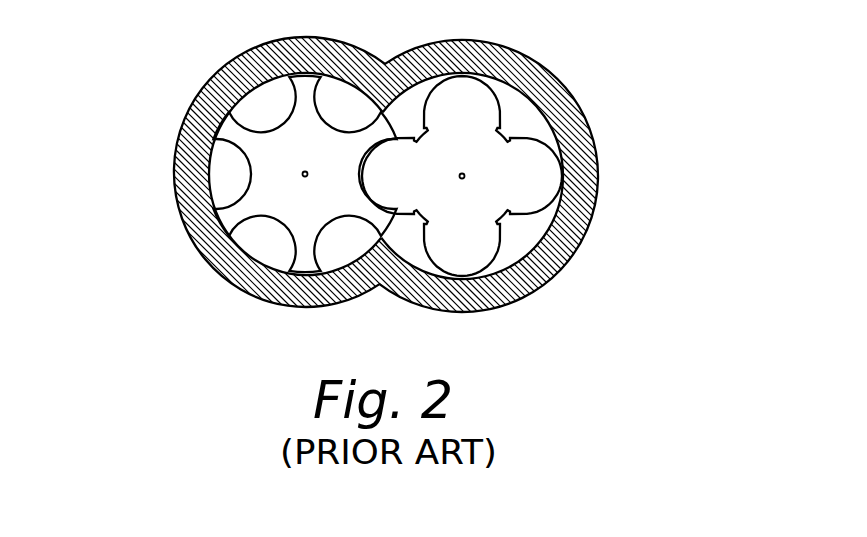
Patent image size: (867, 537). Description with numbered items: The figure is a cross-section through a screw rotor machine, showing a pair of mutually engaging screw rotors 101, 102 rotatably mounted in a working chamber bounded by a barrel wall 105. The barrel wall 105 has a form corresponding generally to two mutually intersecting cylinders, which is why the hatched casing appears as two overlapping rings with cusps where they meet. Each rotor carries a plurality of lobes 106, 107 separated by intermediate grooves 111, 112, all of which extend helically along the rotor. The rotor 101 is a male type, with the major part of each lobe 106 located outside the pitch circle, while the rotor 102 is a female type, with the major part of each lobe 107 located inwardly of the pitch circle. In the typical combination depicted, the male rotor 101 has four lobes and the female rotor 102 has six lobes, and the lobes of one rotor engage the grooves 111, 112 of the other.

The male screw rotor 101 is at (490, 180).
The female screw rotor 102 is at (283, 182).
The barrel wall 105 is at (183, 152).
The lobes of the male rotor 106 is at (458, 248).
The lobes of the female rotor 107 is at (310, 253).
The intermediate grooves of the male rotor 111 is at (513, 103).
The intermediate grooves of the female rotor 112 is at (245, 110).